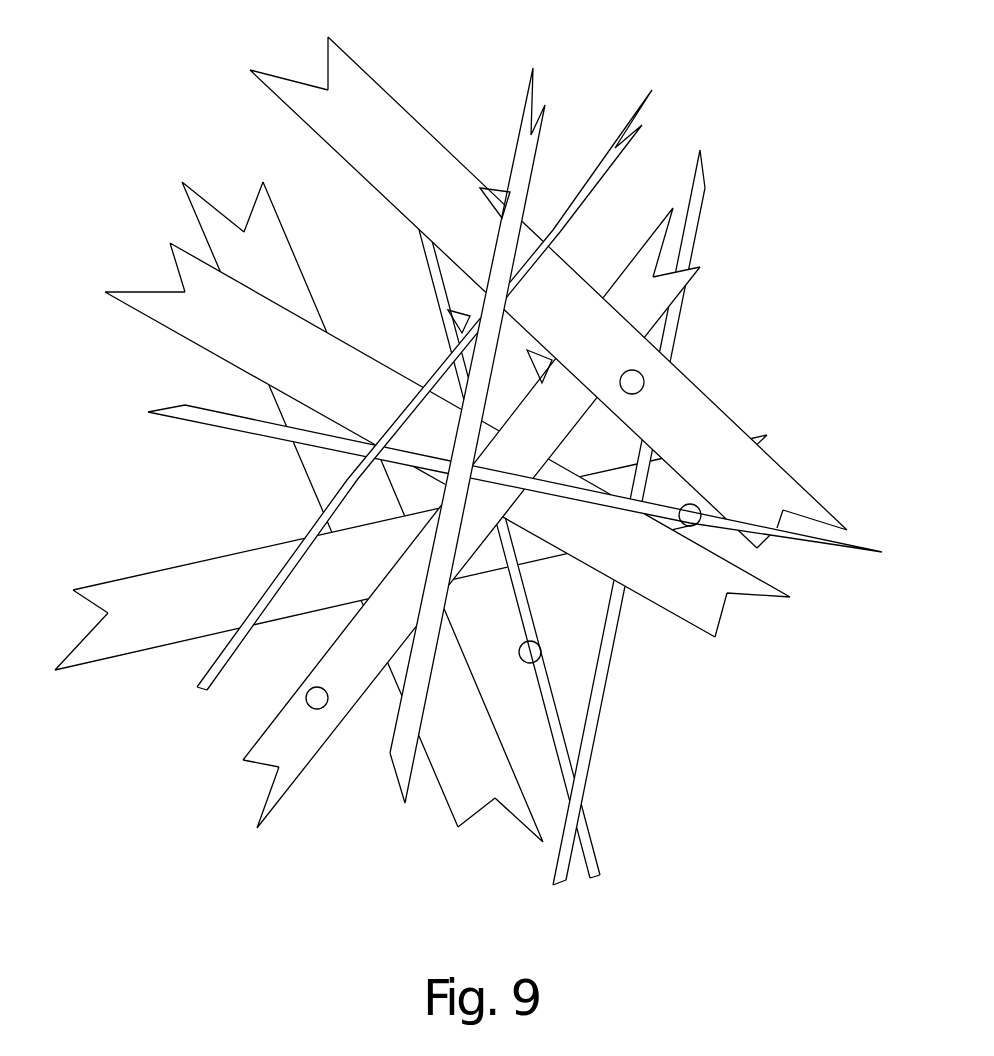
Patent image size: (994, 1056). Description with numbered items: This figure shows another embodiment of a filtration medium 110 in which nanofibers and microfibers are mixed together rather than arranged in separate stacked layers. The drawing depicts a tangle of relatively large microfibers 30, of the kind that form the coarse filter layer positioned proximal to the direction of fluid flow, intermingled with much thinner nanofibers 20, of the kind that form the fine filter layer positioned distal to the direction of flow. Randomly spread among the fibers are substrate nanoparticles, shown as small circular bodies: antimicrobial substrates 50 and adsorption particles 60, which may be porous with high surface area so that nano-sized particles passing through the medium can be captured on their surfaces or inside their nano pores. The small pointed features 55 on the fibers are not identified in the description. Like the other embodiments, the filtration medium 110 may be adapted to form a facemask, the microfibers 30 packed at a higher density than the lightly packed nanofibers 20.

The filtration medium 110 is at (735, 825).
The microfibers 30 is at (140, 630).
The nanofibers 20 is at (412, 728).
The adsorption particles 60 is at (643, 377).
The antimicrobial substrates 50 is at (541, 650).
The barb / point 55 is at (500, 185).